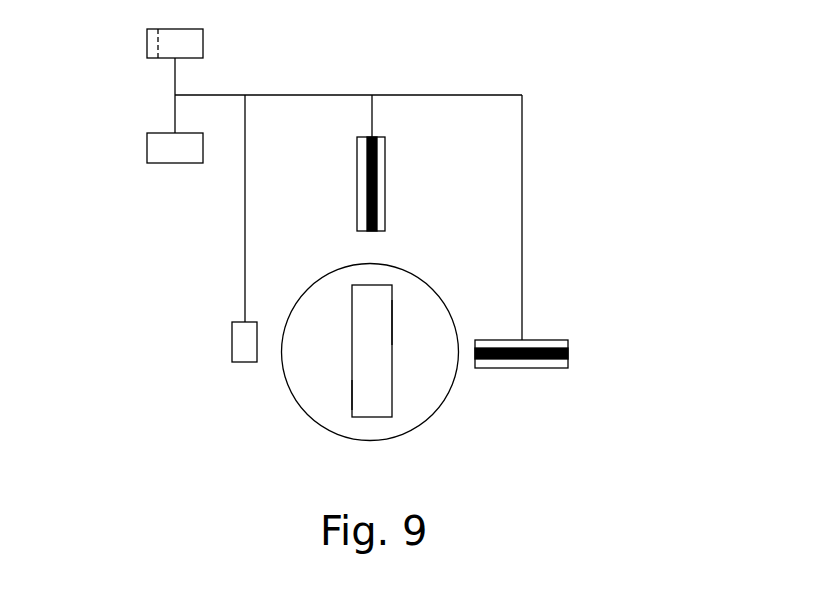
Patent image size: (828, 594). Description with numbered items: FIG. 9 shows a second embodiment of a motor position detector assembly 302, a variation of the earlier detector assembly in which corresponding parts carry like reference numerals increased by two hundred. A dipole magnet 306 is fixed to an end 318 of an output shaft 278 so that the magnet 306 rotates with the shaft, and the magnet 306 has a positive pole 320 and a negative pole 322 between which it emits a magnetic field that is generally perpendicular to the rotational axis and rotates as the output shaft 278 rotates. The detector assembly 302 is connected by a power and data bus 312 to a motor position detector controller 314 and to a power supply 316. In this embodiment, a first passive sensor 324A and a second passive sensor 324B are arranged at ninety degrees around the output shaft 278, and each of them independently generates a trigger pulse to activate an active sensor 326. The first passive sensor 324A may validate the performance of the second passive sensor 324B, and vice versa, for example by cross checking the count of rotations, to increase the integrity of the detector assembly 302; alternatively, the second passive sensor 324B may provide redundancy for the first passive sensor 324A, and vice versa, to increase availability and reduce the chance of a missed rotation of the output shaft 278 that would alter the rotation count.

The motor position detector assembly 302 is at (565, 88).
The dipole magnet 306 is at (395, 323).
The power and data bus 312 is at (310, 95).
The motor position detector controller 314 is at (195, 45).
The power supply 316 is at (167, 163).
The end of the output shaft 318 is at (150, 43).
The positive pole 320 is at (360, 308).
The negative pole 322 is at (367, 400).
The first passive sensor 324A is at (385, 190).
The second passive sensor 324B is at (557, 368).
The active sensor 326 is at (240, 322).
The output shaft 278 is at (433, 415).